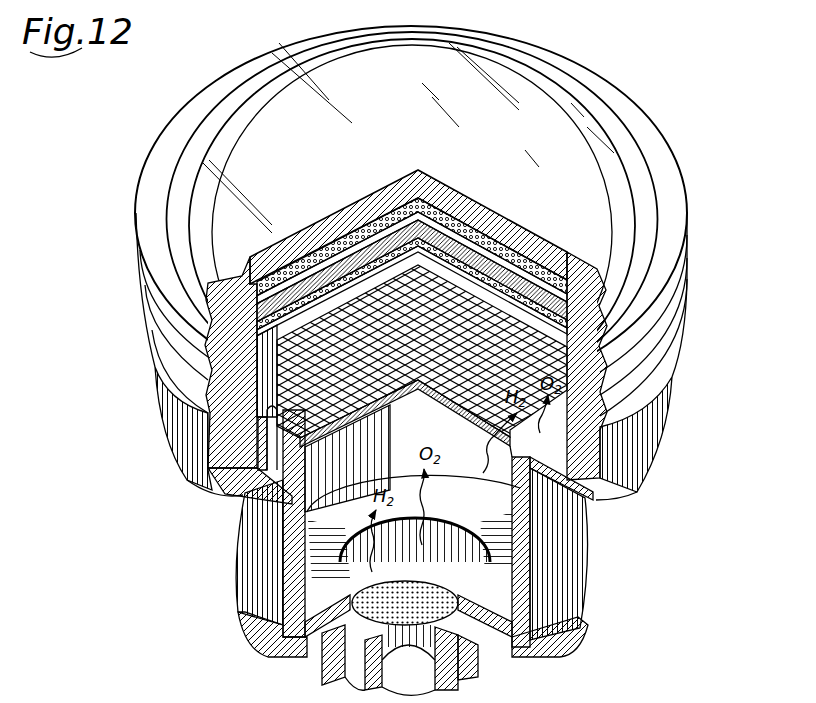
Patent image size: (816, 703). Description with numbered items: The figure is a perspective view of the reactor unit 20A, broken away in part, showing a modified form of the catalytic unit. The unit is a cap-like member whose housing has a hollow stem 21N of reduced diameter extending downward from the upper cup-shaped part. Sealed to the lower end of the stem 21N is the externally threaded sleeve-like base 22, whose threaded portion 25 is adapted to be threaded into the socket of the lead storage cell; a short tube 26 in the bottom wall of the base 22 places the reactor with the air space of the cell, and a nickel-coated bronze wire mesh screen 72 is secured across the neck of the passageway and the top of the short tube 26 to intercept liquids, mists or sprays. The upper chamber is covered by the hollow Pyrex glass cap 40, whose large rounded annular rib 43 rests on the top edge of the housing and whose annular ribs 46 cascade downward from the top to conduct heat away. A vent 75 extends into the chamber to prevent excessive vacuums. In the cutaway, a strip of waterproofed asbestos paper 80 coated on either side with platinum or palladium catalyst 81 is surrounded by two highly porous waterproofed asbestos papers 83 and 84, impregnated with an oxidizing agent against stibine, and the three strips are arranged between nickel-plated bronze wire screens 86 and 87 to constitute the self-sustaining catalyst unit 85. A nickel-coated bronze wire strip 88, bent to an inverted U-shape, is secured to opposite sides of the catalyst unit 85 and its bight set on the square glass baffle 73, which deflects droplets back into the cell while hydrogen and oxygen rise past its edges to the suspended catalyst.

The reactor unit 20A is at (616, 77).
The cap 40 is at (307, 62).
The annular ribs 46 is at (195, 148).
The annular rib 43 is at (678, 333).
The asbestos paper strip 80 is at (389, 240).
The vent 75 is at (245, 488).
The catalyst 81 is at (305, 300).
The wire screen 86 is at (425, 240).
The waterproofed asbestos paper 83 is at (462, 250).
The waterproofed asbestos paper 84 is at (505, 262).
The wire screen 87 is at (530, 290).
The catalyst unit 85 is at (390, 288).
The wire strip 88 is at (490, 410).
The baffle 73 is at (428, 395).
The hollow stem 21N is at (549, 518).
The base 22 is at (562, 596).
The threaded portion 25 is at (323, 646).
The wire mesh screen 72 is at (428, 588).
The short tube 26 is at (440, 690).